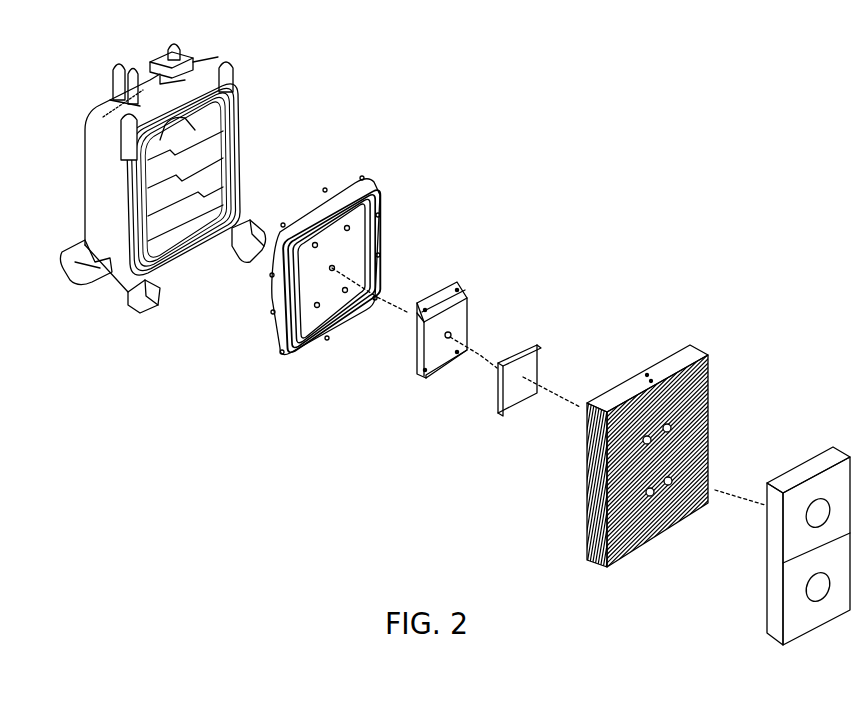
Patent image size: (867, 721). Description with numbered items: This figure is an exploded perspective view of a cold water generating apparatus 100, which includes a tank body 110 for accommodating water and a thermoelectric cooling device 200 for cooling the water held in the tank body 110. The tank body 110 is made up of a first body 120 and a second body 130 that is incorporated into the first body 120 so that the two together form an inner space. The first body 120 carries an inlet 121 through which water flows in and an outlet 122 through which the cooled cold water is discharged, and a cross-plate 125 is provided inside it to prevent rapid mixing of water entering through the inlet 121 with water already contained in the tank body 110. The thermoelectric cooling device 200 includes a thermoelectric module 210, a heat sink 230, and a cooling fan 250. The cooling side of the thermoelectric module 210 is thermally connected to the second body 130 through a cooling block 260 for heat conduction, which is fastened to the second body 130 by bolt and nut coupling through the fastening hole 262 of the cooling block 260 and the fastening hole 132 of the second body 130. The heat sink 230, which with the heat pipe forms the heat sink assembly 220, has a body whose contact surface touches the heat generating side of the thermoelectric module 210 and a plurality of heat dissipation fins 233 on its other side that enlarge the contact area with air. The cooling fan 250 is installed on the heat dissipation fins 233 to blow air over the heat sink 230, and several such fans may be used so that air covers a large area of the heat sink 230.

The cold water generating apparatus 100 is at (637, 184).
The tank body 110 is at (179, 422).
The first body 120 is at (108, 250).
The inlet 121 is at (112, 75).
The outlet 122 is at (184, 50).
The cross-plate 125 is at (241, 142).
The second body 130 is at (277, 340).
The fastening hole 132 is at (350, 230).
The thermoelectric cooling device 200 is at (679, 288).
The thermoelectric module 210 is at (525, 351).
The heat sink assembly 220 is at (677, 362).
The heat sink 230 is at (623, 455).
The heat dissipation fins 233 is at (627, 557).
The cooling fan 250 is at (817, 452).
The cooling block 260 is at (470, 305).
The fastening hole 262 is at (452, 282).